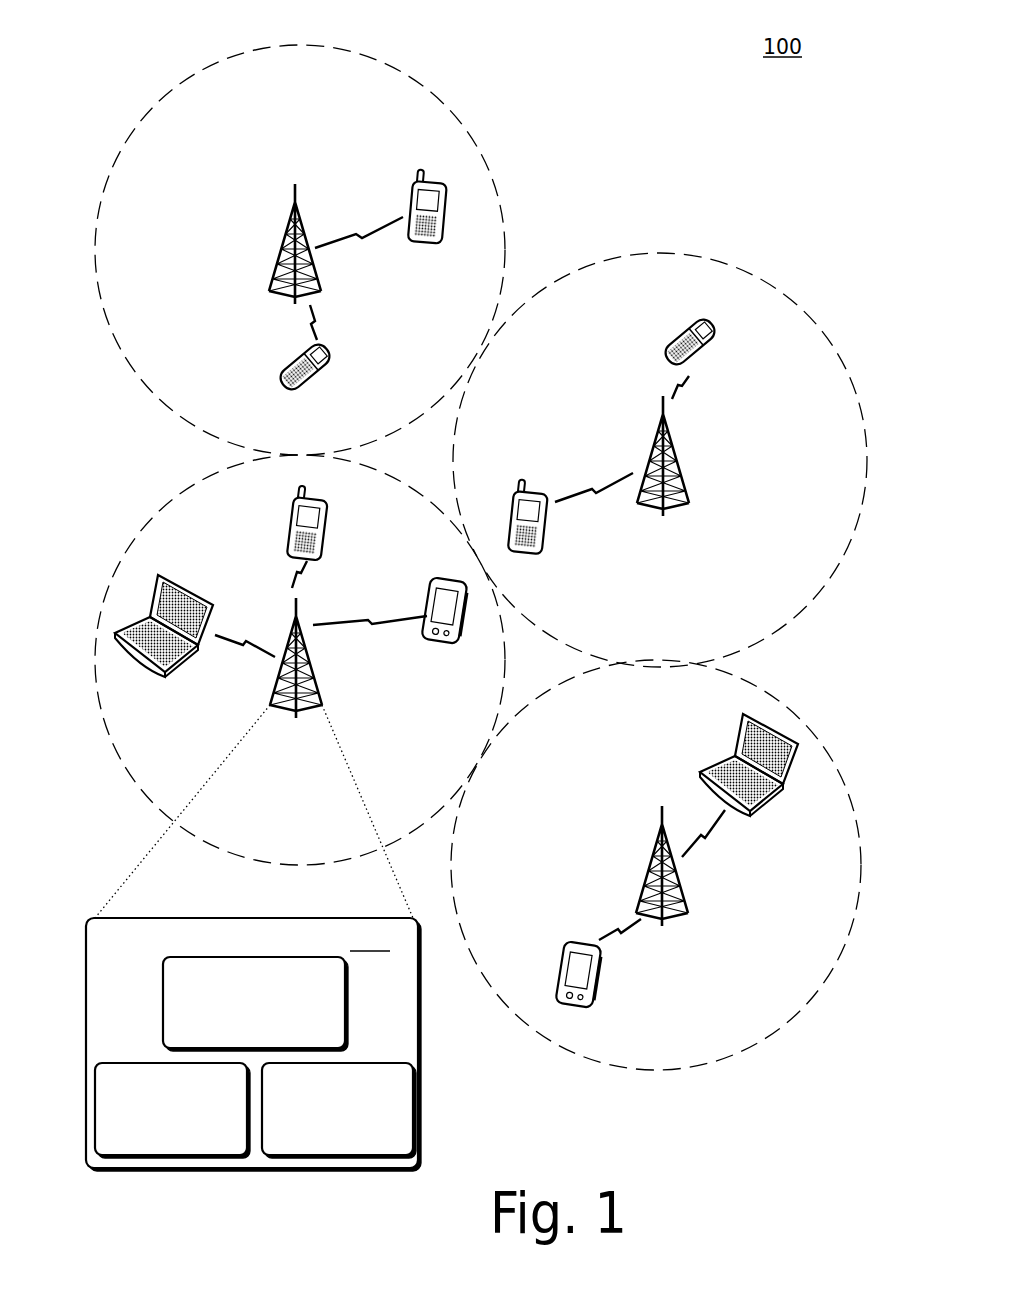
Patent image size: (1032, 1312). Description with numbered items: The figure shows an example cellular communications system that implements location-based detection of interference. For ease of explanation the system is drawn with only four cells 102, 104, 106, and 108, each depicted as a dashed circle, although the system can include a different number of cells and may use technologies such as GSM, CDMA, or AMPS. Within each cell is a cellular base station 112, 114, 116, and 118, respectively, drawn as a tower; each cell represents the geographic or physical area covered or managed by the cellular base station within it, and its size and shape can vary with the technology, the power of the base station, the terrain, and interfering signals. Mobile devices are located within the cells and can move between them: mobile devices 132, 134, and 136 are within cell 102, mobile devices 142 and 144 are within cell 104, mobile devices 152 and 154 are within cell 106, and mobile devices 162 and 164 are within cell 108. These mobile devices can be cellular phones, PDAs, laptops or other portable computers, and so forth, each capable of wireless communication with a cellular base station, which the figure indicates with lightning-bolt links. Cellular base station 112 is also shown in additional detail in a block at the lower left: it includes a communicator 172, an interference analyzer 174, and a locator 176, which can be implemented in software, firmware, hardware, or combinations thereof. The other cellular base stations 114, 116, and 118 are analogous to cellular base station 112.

The cell 102 is at (292, 660).
The cell 104 is at (300, 249).
The cell 106 is at (660, 442).
The cell 108 is at (656, 875).
The cellular base station 112 is at (253, 826).
The cellular base station 114 is at (383, 174).
The cellular base station 116 is at (753, 520).
The cellular base station 118 is at (720, 952).
The mobile device 132 is at (147, 599).
The mobile device 134 is at (227, 503).
The mobile device 136 is at (490, 630).
The mobile device 142 is at (437, 282).
The mobile device 144 is at (488, 166).
The mobile device 152 is at (760, 320).
The mobile device 154 is at (676, 582).
The mobile device 162 is at (778, 879).
The mobile device 164 is at (635, 1034).
The communicator 172 is at (235, 1029).
The interference analyzer 174 is at (152, 1149).
The locator 176 is at (318, 1134).